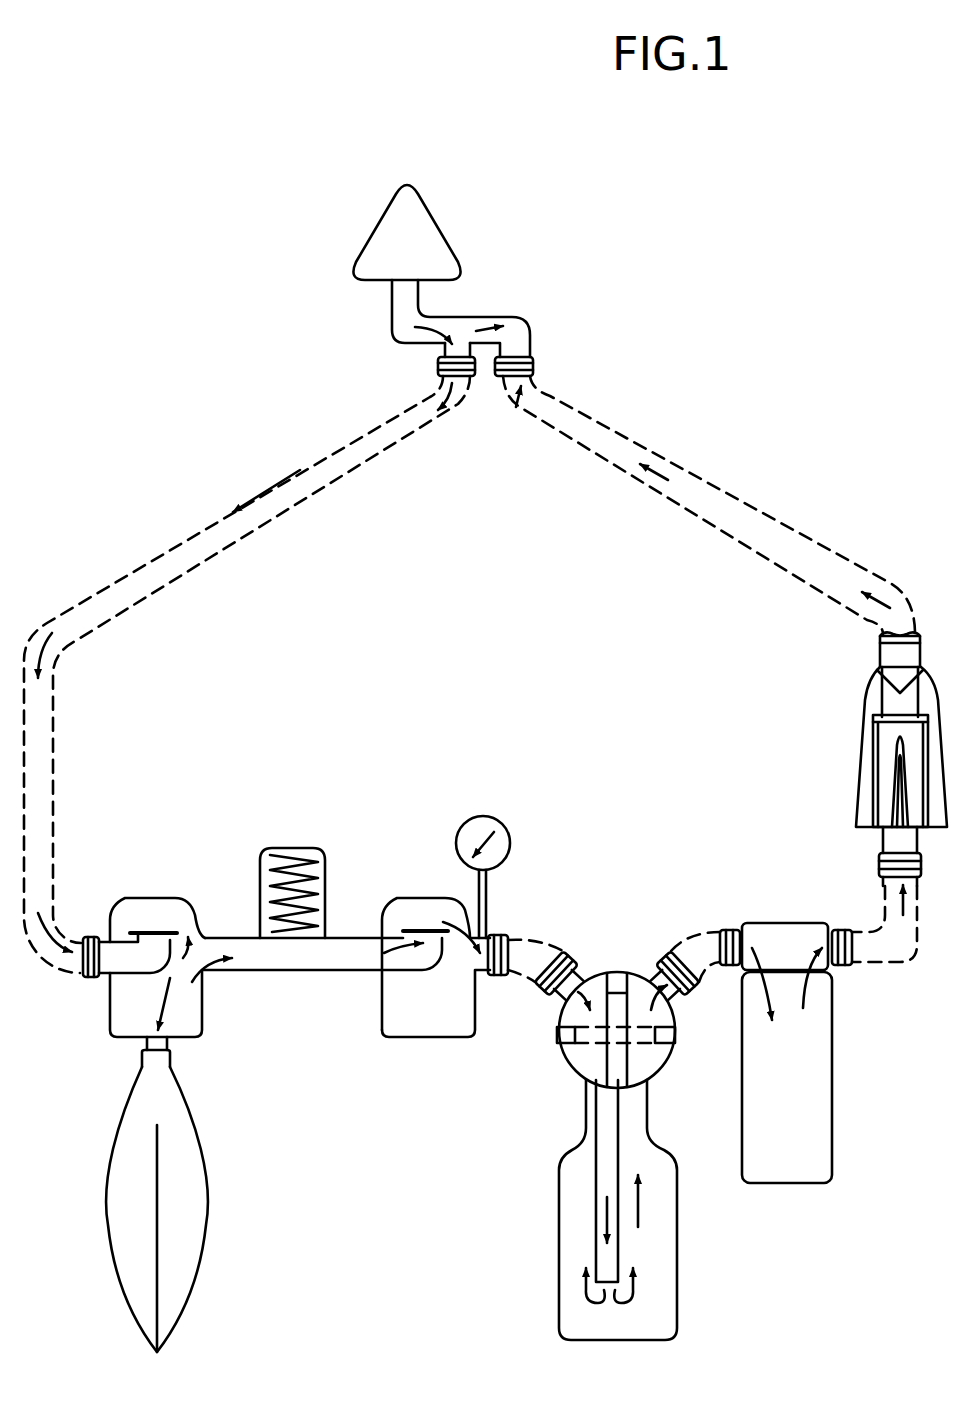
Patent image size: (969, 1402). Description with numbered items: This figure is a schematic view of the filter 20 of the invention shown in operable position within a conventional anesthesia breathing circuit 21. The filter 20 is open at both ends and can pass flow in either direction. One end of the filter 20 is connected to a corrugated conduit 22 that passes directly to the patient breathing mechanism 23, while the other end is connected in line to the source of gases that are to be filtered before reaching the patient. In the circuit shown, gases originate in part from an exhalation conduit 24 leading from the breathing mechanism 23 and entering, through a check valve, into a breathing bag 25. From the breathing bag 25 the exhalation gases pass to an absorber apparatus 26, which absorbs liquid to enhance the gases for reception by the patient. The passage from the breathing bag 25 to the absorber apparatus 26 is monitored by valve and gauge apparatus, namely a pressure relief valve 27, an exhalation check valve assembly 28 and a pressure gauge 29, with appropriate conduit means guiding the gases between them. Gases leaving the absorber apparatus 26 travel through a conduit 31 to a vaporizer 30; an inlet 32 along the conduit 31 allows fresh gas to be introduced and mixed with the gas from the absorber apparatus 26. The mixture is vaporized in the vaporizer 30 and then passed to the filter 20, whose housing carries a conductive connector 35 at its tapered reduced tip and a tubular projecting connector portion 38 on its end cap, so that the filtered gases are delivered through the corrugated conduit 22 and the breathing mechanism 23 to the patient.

The filter 20 is at (823, 773).
The anesthesia breathing circuit 21 is at (663, 345).
The corrugated conduit 22 is at (717, 494).
The patient breathing mechanism 23 is at (469, 316).
The exhalation conduit 24 is at (270, 490).
The breathing bag 25 is at (182, 1267).
The absorber apparatus 26 is at (655, 1268).
The pressure relief valve 27 is at (297, 953).
The exhalation check valve assembly 28 is at (433, 1017).
The pressure gauge 29 is at (510, 835).
The vaporizer 30 is at (800, 1090).
The conduit 31 is at (704, 962).
The inlet 32 is at (698, 933).
The conductive connector 35 is at (903, 653).
The projecting connector portion 38 is at (879, 865).